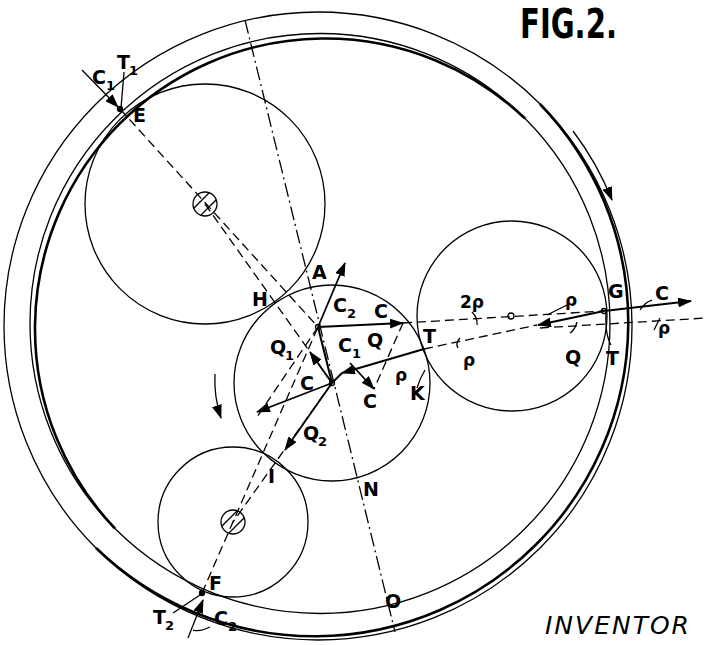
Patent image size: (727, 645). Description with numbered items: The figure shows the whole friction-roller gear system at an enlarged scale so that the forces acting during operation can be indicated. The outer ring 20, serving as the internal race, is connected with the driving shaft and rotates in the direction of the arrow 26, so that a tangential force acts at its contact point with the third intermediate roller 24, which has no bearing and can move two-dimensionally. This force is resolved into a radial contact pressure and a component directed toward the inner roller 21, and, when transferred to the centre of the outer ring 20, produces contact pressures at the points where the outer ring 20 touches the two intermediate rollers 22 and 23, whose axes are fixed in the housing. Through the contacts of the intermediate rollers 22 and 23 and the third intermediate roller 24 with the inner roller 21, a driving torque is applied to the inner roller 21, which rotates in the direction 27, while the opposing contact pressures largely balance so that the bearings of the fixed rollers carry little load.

The outer ring 20 is at (467, 59).
The inner roller 21 is at (399, 447).
The intermediate roller 22 is at (123, 132).
The intermediate roller 23 is at (173, 552).
The third intermediate roller 24 is at (582, 282).
The arrow 26 is at (586, 155).
The direction of rotation 27 is at (219, 383).